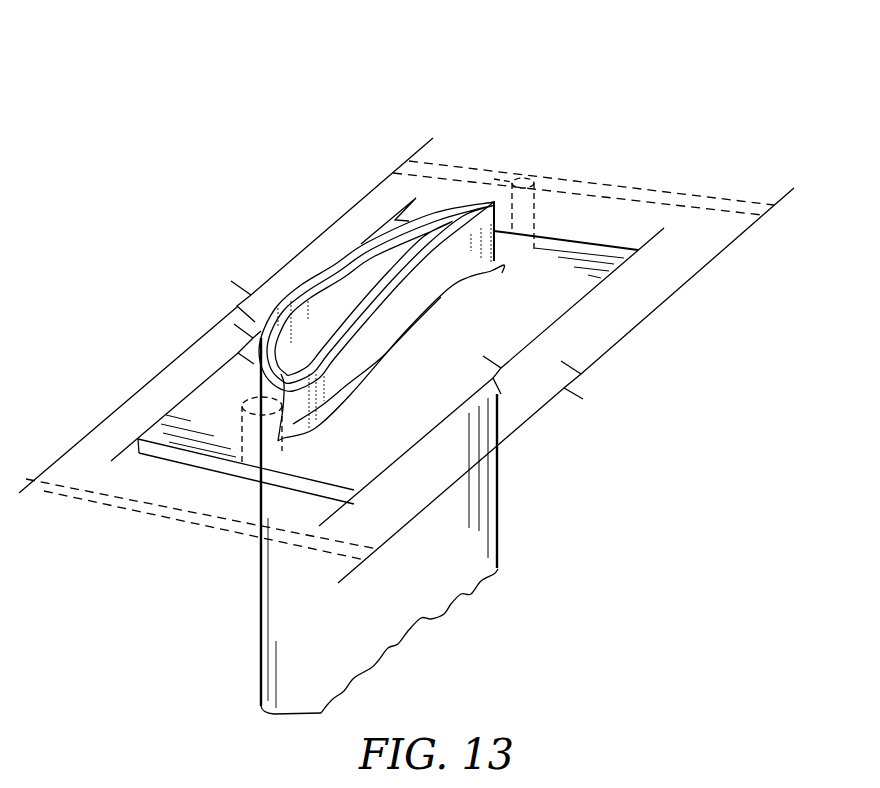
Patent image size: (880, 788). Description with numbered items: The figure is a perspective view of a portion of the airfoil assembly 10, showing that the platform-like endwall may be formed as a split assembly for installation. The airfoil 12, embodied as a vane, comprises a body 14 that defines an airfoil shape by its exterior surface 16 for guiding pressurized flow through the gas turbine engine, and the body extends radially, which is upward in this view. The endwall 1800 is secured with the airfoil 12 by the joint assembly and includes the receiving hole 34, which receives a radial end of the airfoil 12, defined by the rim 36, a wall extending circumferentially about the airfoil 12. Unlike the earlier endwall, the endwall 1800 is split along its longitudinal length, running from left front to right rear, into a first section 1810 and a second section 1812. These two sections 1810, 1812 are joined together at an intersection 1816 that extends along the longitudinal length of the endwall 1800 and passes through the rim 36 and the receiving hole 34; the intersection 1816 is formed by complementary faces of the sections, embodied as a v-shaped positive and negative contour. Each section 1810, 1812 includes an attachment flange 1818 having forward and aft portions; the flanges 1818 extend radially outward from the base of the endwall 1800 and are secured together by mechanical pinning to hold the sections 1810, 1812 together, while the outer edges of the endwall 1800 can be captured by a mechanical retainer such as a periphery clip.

The airfoil assembly 10 is at (705, 134).
The airfoil 12 is at (502, 568).
The body 14 is at (463, 541).
The exterior surface 16 is at (473, 590).
The receiving hole 34 is at (328, 301).
The rim 36 is at (461, 200).
The endwall 1800 is at (615, 238).
The first section 1810 is at (413, 420).
The second section 1812 is at (163, 425).
The intersection 1816 is at (255, 472).
The attachment flange 1818 is at (239, 406).